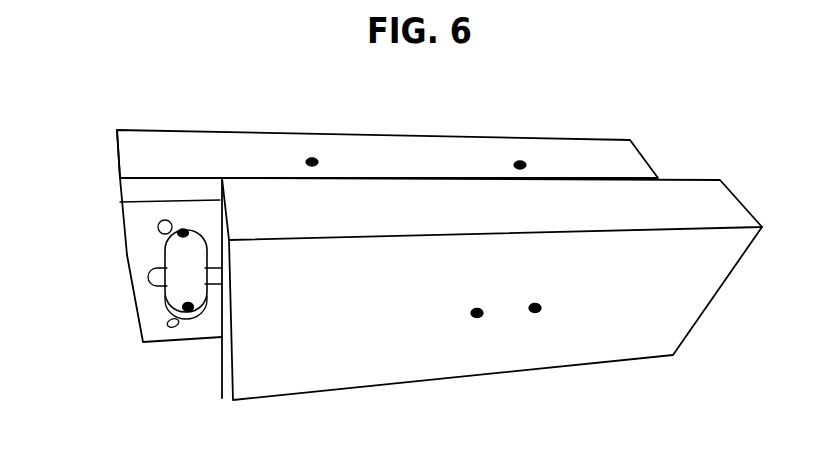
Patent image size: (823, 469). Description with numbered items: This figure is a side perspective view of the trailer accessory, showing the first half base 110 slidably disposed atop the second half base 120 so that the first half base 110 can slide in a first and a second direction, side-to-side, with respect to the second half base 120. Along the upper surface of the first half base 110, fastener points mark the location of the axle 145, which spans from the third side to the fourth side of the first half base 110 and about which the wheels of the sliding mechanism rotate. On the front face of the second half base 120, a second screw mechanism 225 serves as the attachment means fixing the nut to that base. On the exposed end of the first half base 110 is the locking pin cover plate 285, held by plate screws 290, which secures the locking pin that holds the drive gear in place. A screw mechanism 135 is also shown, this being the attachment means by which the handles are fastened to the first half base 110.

The first half base 110 is at (645, 158).
The second half base 120 is at (700, 318).
The axle 145 is at (312, 160).
The second screw mechanism 225 is at (478, 316).
The locking pin cover plate 285 is at (185, 255).
The plate screws 290 is at (188, 311).
The screw mechanism 135 is at (168, 326).